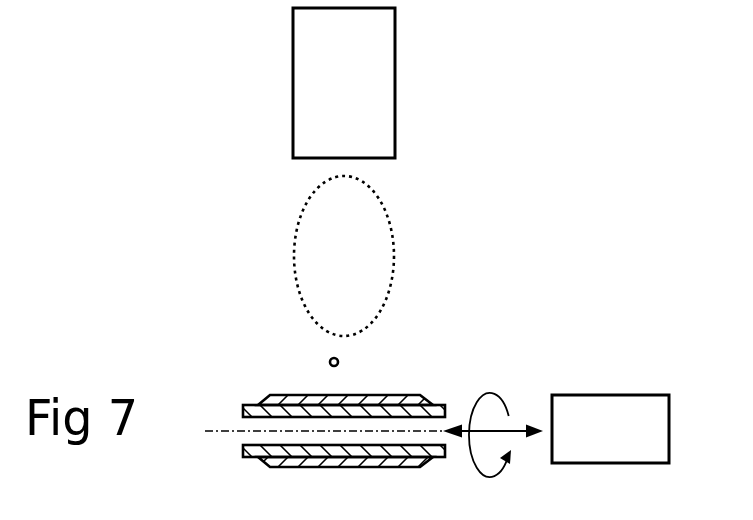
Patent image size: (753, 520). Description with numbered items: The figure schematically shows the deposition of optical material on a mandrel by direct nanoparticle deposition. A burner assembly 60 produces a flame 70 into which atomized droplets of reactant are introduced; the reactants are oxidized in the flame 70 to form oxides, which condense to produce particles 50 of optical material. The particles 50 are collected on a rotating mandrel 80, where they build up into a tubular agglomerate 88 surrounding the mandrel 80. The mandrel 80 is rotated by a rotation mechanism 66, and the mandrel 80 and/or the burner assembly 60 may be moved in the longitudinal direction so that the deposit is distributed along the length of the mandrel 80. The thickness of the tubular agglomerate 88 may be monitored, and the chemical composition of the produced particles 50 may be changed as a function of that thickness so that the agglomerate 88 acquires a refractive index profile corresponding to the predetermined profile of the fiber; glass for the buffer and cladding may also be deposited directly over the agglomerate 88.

The burner assembly 60 is at (395, 106).
The flame 70 is at (295, 240).
The particles 50 is at (339, 362).
The mandrel 80 is at (433, 404).
The tubular agglomerate 88 is at (287, 395).
The rotation mechanism 66 is at (640, 393).